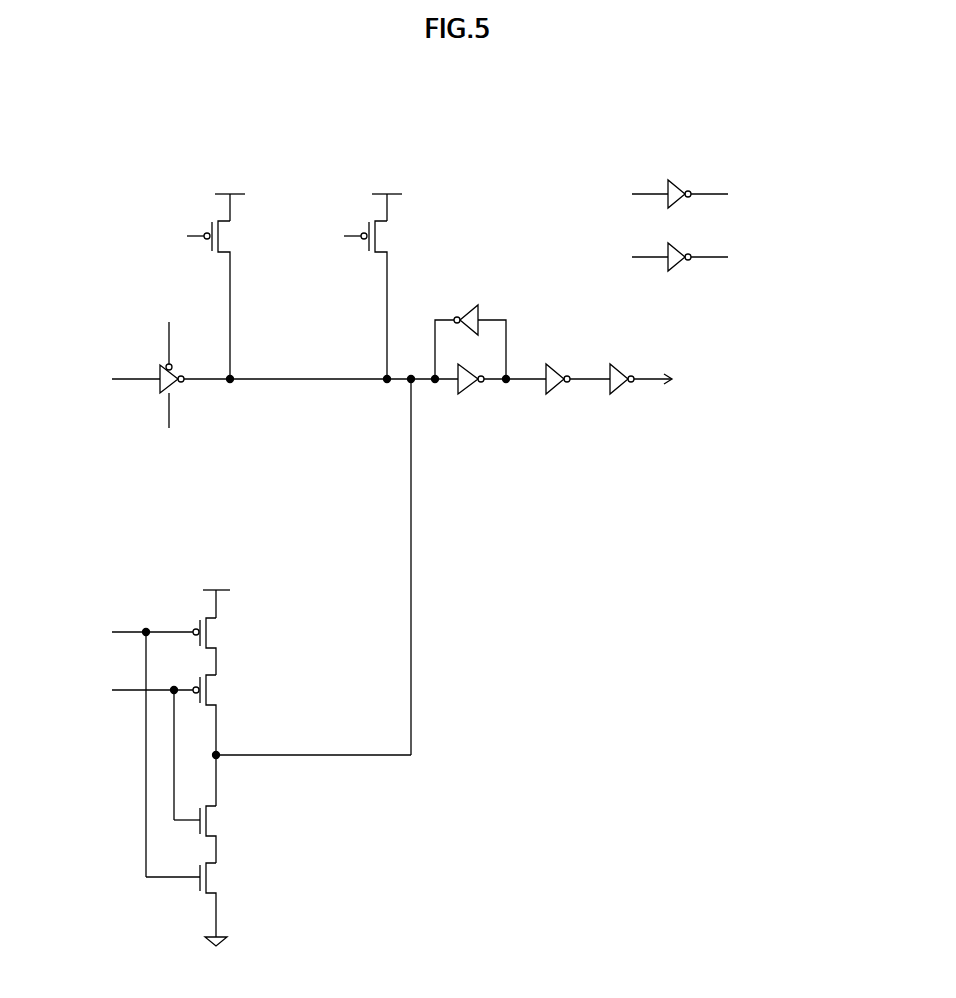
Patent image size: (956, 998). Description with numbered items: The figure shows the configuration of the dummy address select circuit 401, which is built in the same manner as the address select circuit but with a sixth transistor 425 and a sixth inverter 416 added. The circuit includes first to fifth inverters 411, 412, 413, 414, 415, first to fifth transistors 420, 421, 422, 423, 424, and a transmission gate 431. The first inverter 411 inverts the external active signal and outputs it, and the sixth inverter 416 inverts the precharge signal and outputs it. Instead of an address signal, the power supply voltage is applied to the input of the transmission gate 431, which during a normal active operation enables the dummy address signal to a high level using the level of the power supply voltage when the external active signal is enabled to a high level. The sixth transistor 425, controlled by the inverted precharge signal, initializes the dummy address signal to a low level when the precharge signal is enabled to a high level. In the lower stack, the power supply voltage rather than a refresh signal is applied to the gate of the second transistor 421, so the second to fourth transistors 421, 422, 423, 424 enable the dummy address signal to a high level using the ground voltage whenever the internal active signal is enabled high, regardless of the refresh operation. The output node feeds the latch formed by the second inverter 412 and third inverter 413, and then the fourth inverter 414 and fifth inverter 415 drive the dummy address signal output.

The dummy address select circuit 401 is at (838, 116).
The first inverter 411 is at (681, 184).
The second inverter 412 is at (472, 368).
The third inverter 413 is at (476, 310).
The fourth inverter 414 is at (559, 367).
The fifth inverter 415 is at (623, 367).
The sixth inverter 416 is at (681, 247).
The first transistor 420 is at (236, 237).
The second transistor 421 is at (222, 633).
The third transistor 422 is at (222, 691).
The fourth transistor 423 is at (222, 821).
The fifth transistor 424 is at (222, 878).
The sixth transistor 425 is at (393, 237).
The transmission gate 431 is at (173, 366).